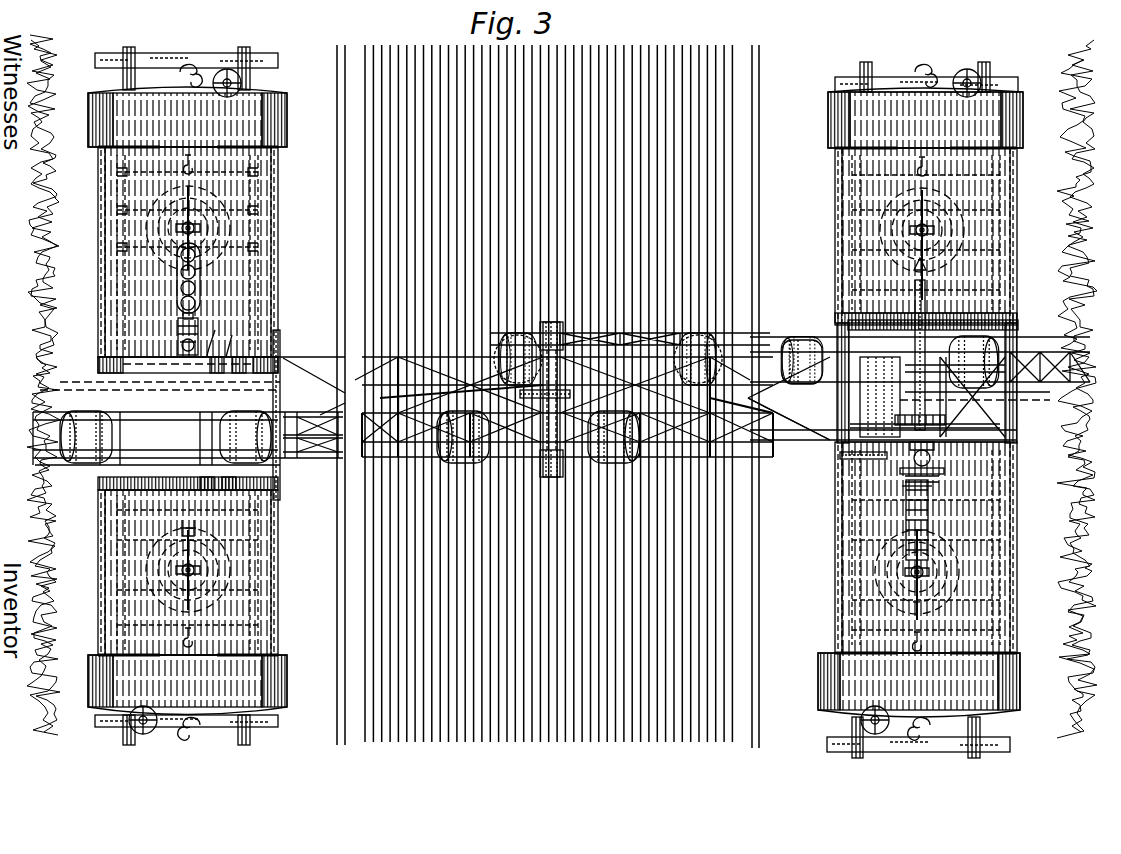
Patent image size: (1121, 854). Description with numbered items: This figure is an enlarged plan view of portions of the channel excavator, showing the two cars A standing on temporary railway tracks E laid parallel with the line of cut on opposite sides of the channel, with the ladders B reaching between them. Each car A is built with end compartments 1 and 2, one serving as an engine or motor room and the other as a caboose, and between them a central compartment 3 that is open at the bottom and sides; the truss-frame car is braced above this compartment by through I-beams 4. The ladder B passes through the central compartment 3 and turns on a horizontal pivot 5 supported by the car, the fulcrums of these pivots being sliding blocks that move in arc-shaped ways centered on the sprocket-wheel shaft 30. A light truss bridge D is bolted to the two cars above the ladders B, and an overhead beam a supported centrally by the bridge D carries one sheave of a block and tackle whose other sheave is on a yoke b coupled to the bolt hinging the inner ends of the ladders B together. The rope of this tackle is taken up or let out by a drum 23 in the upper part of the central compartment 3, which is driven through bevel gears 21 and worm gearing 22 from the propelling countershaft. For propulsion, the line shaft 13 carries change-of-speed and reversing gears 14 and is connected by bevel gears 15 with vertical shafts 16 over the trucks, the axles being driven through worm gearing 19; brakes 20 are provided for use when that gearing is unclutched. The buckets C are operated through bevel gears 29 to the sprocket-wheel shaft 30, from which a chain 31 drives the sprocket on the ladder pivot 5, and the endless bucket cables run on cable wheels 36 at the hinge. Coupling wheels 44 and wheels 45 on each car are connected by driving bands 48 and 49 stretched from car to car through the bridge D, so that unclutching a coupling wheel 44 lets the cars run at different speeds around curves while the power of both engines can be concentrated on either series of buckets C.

The end compartment 1 is at (104, 186).
The end compartment 2 is at (270, 541).
The central compartment 3 is at (84, 400).
The through I-beams 4 is at (278, 393).
The horizontal pivot 5 is at (898, 296).
The line shaft 13 is at (183, 533).
The change-of-speed gears and reversing gears 14 is at (930, 490).
The bevel gears 15 is at (181, 228).
The vertical shafts 16 is at (196, 222).
The worm gearing 19 is at (186, 165).
The brakes 20 is at (222, 91).
The bevel gears 21 is at (905, 480).
The worm gearing 22 is at (858, 458).
The drum 23 is at (933, 358).
The bevel gears 29 is at (933, 458).
The sprocket-wheel shaft 30 is at (948, 392).
The chain 31 is at (164, 360).
The cable wheels 36 is at (610, 338).
The coupling wheels 44 is at (925, 423).
The wheels 45 is at (826, 340).
The driving band 48 is at (788, 434).
The driving band 49 is at (735, 384).
The car A is at (175, 88).
The ladder B is at (36, 440).
The scraping and conveying buckets C is at (72, 460).
The light truss bridge D is at (355, 358).
The temporary railway tracks E is at (170, 750).
The overhead beam a is at (545, 395).
The yoke b is at (540, 334).